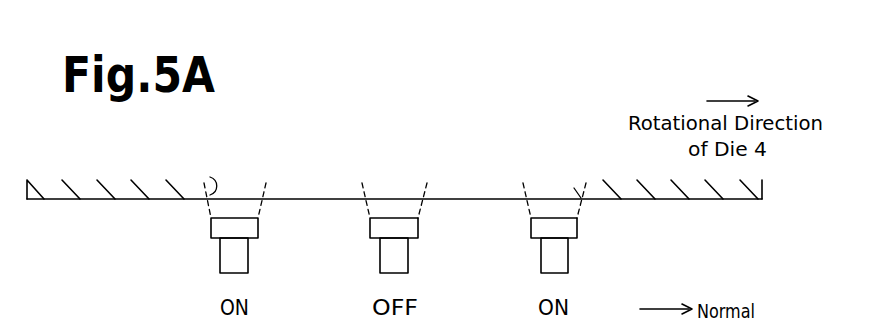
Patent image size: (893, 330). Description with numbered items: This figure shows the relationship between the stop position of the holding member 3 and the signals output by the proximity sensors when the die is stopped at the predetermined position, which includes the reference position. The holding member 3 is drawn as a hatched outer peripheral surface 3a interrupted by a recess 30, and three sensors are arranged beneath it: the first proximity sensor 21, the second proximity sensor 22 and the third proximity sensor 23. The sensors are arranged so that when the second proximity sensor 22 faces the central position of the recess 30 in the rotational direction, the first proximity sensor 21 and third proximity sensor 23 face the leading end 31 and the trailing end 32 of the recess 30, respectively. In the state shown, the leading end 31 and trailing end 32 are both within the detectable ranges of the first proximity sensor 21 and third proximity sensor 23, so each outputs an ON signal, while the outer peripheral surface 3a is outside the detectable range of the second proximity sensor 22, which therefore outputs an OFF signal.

The holding member 3 is at (389, 196).
The outer peripheral surface 3a is at (389, 196).
The recess 30 is at (489, 196).
The leading end 31 is at (574, 188).
The trailing end 32 is at (210, 199).
The first proximity sensor 21 is at (568, 257).
The second proximity sensor 22 is at (408, 257).
The third proximity sensor 23 is at (248, 257).